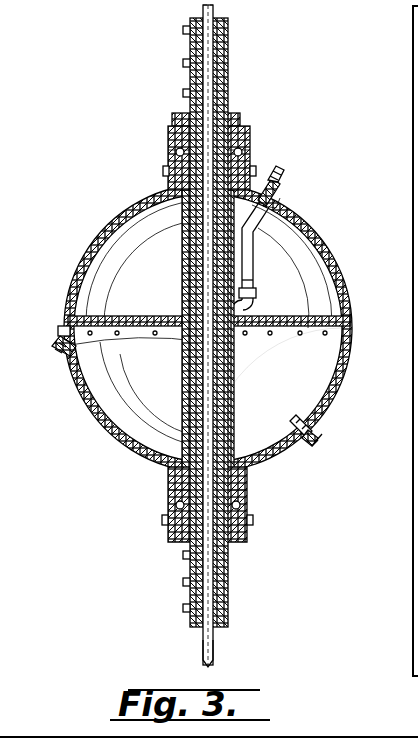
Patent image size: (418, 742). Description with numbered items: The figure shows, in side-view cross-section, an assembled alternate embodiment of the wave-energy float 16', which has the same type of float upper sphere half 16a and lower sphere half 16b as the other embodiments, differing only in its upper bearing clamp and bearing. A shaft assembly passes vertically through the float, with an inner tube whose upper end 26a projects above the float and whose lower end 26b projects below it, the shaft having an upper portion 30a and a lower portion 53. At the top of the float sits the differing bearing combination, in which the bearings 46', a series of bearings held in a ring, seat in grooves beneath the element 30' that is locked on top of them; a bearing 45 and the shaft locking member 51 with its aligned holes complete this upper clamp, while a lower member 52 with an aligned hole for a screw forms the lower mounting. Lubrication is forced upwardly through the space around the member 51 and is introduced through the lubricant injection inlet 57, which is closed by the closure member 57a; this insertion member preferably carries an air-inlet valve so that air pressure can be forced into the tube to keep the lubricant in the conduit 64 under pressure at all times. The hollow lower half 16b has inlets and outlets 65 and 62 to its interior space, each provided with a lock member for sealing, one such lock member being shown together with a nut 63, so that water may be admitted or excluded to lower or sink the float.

The spherical float 16' is at (218, 259).
The upper sphere half 16a is at (310, 224).
The lower sphere half 16b is at (284, 455).
The inner tube upper end 26a is at (200, 8).
The inner tube lower end 26b is at (215, 650).
The element locked on top of the bearings 30' is at (237, 322).
The shaft upper portion 30a is at (232, 118).
The bearings 46' is at (255, 289).
The shaft locking member 51 is at (172, 158).
The bearing 45 is at (262, 160).
The lubricant injection inlet 57 is at (280, 186).
The closure member 57a is at (290, 172).
The lubricant conduit 64 is at (252, 248).
The inlet/outlet 65 is at (58, 354).
The inlet/outlet 62 is at (298, 418).
The nut 63 is at (318, 434).
The member with aligned hole 52 is at (248, 528).
The shaft lower portion 53 is at (228, 592).